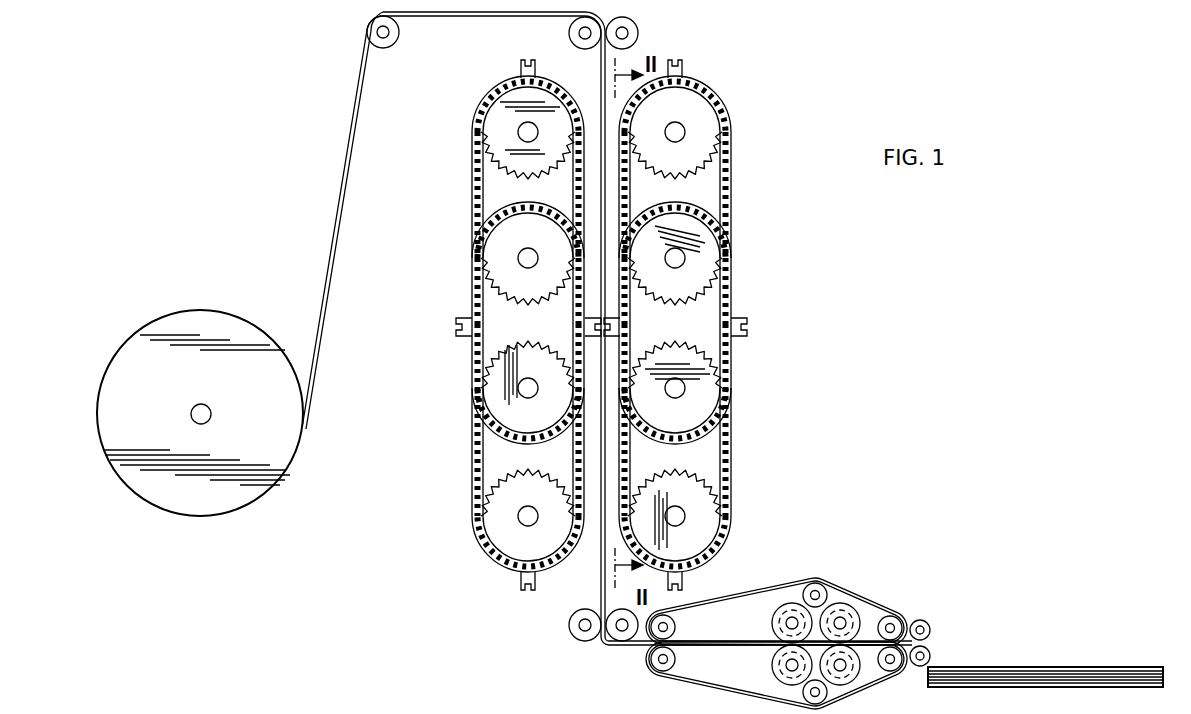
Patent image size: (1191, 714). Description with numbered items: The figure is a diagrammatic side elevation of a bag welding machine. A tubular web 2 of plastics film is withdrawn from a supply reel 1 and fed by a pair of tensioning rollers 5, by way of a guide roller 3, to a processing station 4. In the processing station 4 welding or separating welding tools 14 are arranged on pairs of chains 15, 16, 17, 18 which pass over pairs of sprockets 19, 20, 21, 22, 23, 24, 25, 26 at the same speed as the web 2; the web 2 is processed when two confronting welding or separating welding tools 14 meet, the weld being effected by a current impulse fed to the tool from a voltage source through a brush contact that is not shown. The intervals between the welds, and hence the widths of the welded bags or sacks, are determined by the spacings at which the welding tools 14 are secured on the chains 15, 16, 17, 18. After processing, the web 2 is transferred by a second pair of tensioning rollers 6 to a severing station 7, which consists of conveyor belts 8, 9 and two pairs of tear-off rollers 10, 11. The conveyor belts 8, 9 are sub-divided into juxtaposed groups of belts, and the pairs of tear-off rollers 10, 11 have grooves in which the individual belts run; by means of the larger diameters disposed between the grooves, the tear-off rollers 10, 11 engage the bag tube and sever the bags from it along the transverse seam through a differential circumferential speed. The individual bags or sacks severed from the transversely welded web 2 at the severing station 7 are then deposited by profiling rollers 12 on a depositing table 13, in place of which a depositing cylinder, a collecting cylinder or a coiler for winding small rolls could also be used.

The supply reel 1 is at (263, 490).
The tubular web 2 is at (352, 135).
The guide roller 3 is at (367, 33).
The processing station 4 is at (611, 323).
The pair of tensioning rollers 5 is at (640, 30).
The pair of tensioning rollers 6 is at (590, 642).
The severing station 7 is at (777, 615).
The conveyor belt 8 is at (843, 600).
The conveyor belt 9 is at (858, 681).
The pair of tear-off rollers 10 is at (768, 648).
The pair of tear-off rollers 11 is at (860, 642).
The profiling rollers 12 is at (931, 630).
The depositing table 13 is at (1045, 666).
The welding or separating welding tools 14 is at (604, 329).
The chain 15 is at (730, 178).
The chain 16 is at (732, 455).
The chain 17 is at (472, 184).
The chain 18 is at (472, 466).
The sprocket 19 is at (505, 113).
The sprocket 20 is at (492, 252).
The sprocket 21 is at (490, 380).
The sprocket 22 is at (496, 532).
The sprocket 23 is at (697, 110).
The sprocket 24 is at (710, 258).
The sprocket 25 is at (710, 388).
The sprocket 26 is at (707, 523).